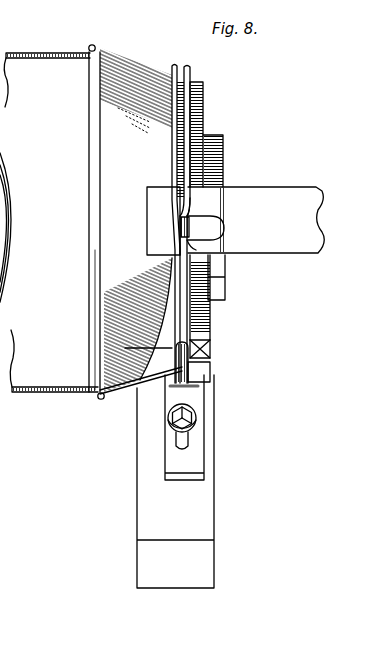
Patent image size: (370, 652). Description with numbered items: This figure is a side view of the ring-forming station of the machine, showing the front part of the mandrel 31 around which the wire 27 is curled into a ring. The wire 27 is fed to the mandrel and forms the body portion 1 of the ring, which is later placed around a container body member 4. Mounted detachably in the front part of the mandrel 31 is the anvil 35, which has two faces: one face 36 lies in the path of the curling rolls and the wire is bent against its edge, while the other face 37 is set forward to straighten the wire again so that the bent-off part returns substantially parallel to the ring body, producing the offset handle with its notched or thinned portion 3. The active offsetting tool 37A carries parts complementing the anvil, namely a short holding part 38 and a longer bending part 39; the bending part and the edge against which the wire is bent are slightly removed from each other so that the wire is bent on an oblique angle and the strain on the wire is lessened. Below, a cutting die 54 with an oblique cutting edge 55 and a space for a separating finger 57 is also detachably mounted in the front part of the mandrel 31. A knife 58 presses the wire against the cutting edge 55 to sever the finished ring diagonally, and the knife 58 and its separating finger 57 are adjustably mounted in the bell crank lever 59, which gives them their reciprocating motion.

The container body member 4 is at (32, 54).
The body portion 1 is at (92, 45).
The wire 27 is at (188, 66).
The front part of the mandrel 31 is at (128, 122).
The anvil face 36 is at (190, 201).
The short holding part 38 is at (200, 202).
The anvil 35 is at (160, 214).
The notched or thinned portion 3 is at (183, 226).
The offsetting tool 37A is at (256, 220).
The anvil face 37 is at (175, 248).
The bending part 39 is at (224, 260).
The cutting die 54 is at (203, 333).
The oblique cutting edge 55 is at (198, 348).
The knife 58 is at (204, 372).
The separating finger 57 is at (105, 356).
The bell crank lever 59 is at (160, 498).